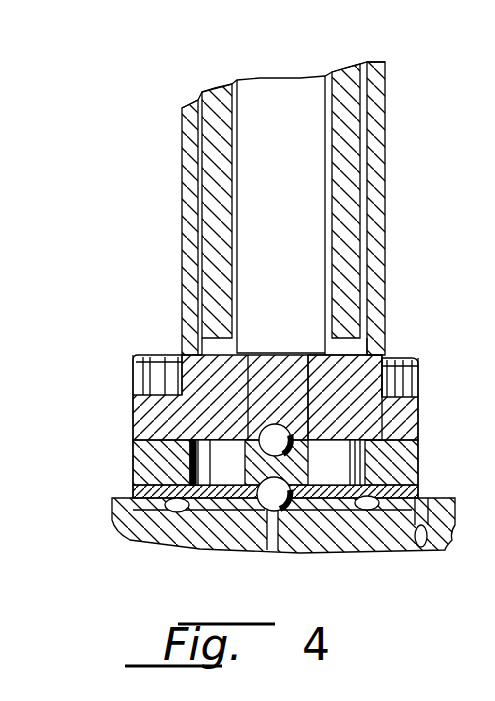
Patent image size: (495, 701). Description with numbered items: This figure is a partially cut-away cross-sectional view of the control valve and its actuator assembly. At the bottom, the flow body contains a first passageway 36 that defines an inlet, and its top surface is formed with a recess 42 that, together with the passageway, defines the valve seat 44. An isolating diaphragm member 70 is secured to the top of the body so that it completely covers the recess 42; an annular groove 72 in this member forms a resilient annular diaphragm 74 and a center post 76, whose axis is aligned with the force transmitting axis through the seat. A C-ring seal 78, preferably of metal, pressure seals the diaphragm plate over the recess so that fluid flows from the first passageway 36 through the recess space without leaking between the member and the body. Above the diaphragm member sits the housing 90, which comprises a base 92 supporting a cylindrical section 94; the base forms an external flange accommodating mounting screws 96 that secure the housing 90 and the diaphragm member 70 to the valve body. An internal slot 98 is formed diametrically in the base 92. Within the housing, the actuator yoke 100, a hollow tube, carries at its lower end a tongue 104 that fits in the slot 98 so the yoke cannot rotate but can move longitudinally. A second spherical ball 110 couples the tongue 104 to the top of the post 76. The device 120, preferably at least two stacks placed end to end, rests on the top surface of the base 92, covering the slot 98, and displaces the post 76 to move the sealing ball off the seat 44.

The first passageway 36 is at (272, 515).
The recess 42 is at (335, 508).
The valve seat 44 is at (258, 502).
The isolating diaphragm member 70 is at (424, 455).
The annular groove 72 is at (213, 458).
The resilient annular diaphragm 74 is at (218, 492).
The center post 76 is at (308, 460).
The C-ring seal 78 is at (402, 488).
The housing 90 is at (388, 202).
The base 92 is at (362, 420).
The cylindrical section 94 is at (378, 140).
The mounting screws 96 is at (415, 361).
The internal slot 98 is at (255, 402).
The actuator yoke 100 is at (207, 183).
The tongue 104 is at (255, 398).
The second spherical ball 110 is at (338, 428).
The device 120 is at (300, 156).